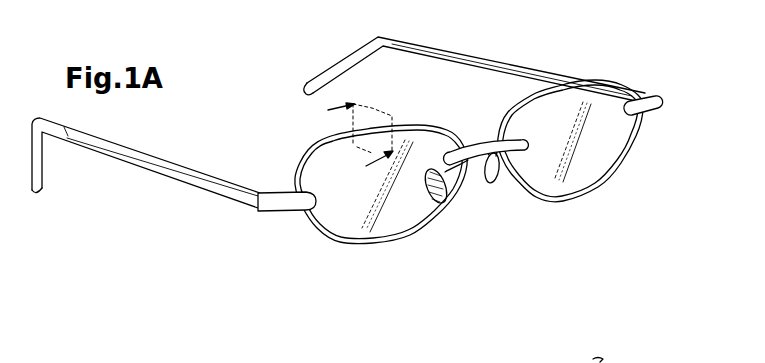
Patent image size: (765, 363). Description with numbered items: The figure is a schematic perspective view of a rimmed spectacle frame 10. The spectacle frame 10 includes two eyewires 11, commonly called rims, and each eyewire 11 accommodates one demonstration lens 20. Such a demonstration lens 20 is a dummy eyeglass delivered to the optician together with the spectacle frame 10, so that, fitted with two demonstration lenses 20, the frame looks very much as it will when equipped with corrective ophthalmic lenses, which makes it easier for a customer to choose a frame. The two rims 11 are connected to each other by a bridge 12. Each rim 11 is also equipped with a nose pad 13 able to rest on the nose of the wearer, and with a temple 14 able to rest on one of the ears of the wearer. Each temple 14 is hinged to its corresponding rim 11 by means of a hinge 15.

The rimmed spectacle frame 10 is at (250, 246).
The eyewire 11 is at (362, 246).
The bridge 12 is at (486, 142).
The nose pad 13 is at (435, 212).
The temple 14 is at (205, 172).
The hinge 15 is at (265, 192).
The demonstration lens 20 is at (412, 236).